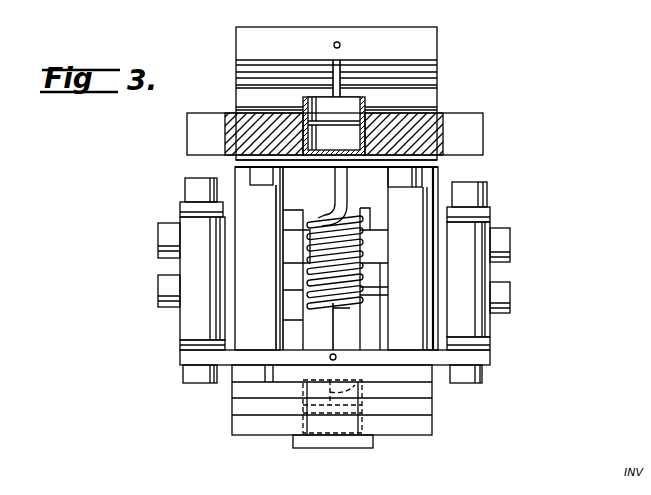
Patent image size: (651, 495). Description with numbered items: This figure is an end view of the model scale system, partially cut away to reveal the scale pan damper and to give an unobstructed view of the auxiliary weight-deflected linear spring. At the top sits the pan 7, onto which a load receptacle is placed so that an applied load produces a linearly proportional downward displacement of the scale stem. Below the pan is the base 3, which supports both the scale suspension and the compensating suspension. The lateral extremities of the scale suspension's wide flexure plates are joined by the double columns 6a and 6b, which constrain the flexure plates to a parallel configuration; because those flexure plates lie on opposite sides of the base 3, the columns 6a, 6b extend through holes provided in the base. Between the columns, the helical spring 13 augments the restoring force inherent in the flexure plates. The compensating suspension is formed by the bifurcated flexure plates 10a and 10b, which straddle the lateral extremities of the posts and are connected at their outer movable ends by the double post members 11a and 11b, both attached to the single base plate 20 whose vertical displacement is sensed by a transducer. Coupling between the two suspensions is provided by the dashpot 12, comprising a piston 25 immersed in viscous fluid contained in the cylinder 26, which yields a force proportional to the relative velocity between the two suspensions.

The pan 7 is at (405, 30).
The base 3 is at (483, 130).
The double column 6a is at (233, 174).
The double column 6b is at (438, 173).
The flexure plate 10a is at (180, 218).
The flexure plate 10b is at (180, 345).
The double post member 11a is at (492, 328).
The double post member 11b is at (180, 328).
The helical spring 13 is at (350, 309).
The base plate 20 is at (313, 347).
The dashpot 12 is at (368, 428).
The piston 25 is at (323, 414).
The cylinder 26 is at (348, 386).